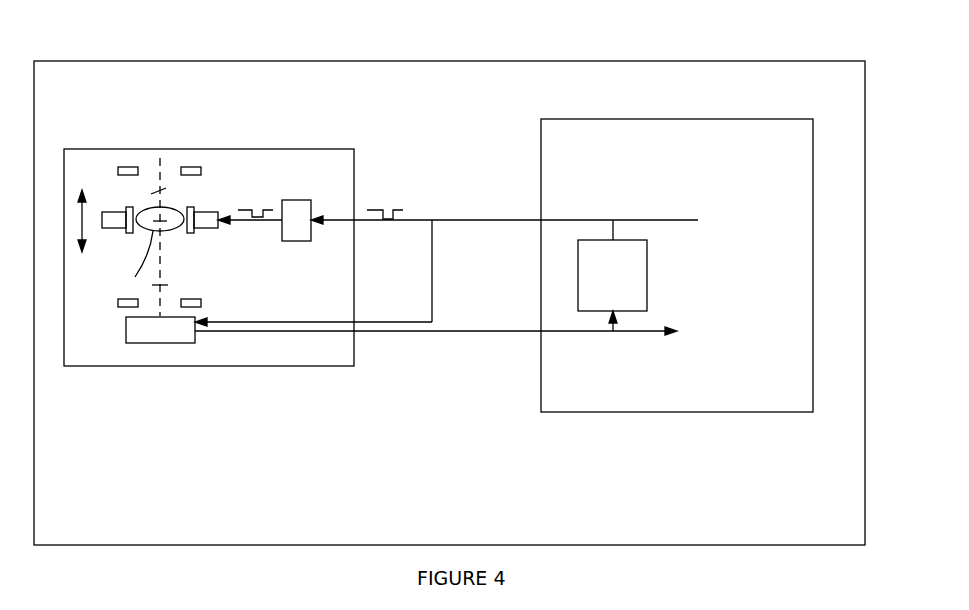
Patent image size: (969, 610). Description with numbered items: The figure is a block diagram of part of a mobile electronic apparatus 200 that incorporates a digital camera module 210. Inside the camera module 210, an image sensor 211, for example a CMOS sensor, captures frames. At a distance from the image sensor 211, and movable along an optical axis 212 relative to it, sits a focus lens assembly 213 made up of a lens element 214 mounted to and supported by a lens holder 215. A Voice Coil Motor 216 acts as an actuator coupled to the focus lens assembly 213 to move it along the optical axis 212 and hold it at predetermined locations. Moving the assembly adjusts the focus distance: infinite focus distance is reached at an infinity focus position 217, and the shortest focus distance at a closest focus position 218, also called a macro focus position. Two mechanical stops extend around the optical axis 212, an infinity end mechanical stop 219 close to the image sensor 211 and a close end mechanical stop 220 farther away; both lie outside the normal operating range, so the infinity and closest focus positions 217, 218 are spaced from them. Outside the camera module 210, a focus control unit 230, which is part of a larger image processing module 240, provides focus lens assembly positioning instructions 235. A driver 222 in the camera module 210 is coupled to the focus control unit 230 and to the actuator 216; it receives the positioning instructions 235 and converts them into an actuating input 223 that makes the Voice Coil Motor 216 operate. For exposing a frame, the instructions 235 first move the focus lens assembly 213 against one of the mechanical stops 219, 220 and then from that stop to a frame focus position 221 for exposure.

The mobile electronic apparatus 200 is at (217, 61).
The digital camera module 210 is at (228, 148).
The image sensor 211 is at (176, 343).
The optical axis 212 is at (164, 161).
The focus lens assembly 213 is at (186, 245).
The lens element 214 is at (125, 263).
The lens holder 215 is at (129, 233).
The Voice Coil Motor 216 is at (207, 212).
The infinity focus position 217 is at (168, 285).
The closest focus position 218 is at (151, 193).
The infinity end mechanical stop 219 is at (120, 304).
The close end mechanical stop 220 is at (117, 167).
The frame focus position 221 is at (165, 222).
The driver 222 is at (298, 241).
The actuating input 223 is at (245, 208).
The focus control unit 230 is at (647, 292).
The focus lens assembly positioning instructions 235 is at (375, 203).
The image processing module 240 is at (615, 120).